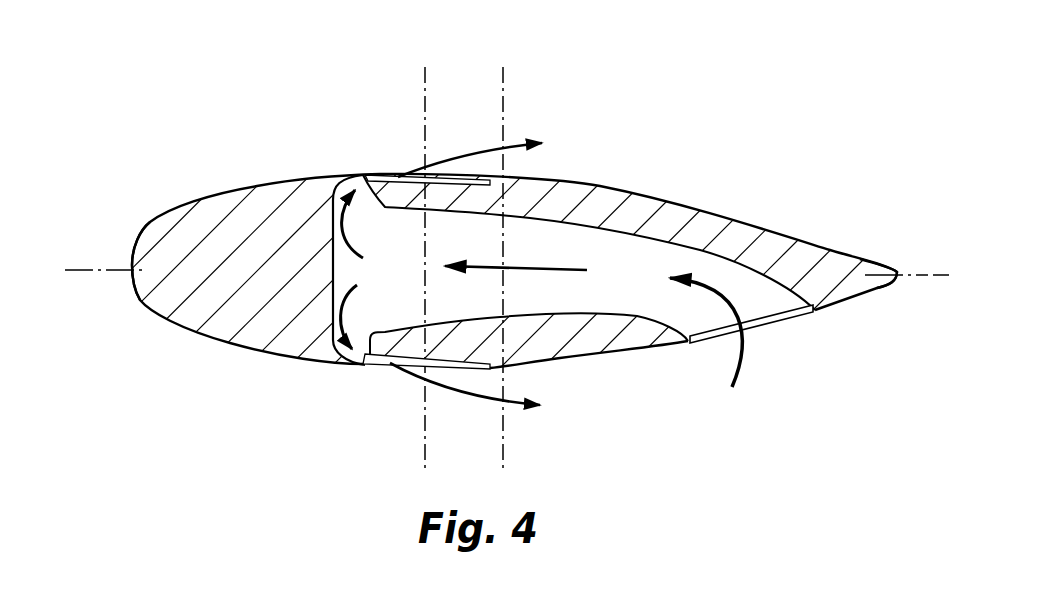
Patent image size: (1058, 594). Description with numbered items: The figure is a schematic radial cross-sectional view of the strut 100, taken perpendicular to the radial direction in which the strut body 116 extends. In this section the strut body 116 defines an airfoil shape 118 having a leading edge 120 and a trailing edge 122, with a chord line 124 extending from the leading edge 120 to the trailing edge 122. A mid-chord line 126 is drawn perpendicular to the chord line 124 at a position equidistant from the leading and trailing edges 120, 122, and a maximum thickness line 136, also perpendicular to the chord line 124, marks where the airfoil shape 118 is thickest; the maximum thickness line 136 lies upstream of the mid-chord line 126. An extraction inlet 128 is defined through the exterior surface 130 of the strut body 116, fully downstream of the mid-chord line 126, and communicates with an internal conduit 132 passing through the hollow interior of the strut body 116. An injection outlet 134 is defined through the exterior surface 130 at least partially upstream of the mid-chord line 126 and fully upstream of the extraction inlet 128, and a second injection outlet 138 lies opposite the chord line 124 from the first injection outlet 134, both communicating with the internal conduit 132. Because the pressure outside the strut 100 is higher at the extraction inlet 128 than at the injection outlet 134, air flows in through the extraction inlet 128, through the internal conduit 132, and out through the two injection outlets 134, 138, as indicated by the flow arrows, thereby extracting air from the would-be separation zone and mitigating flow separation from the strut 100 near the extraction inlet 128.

The strut 100 is at (166, 149).
The strut body 116 is at (648, 281).
The airfoil shape 118 is at (166, 327).
The leading edge 120 is at (132, 247).
The trailing edge 122 is at (900, 261).
The chord line 124 is at (77, 278).
The mid-chord line 126 is at (505, 74).
The extraction inlet 128 is at (796, 334).
The exterior surface 130 is at (210, 342).
The internal conduit 132 is at (408, 274).
The injection outlet 134 is at (393, 169).
The maximum thickness line 136 is at (424, 74).
The second injection outlet 138 is at (378, 381).